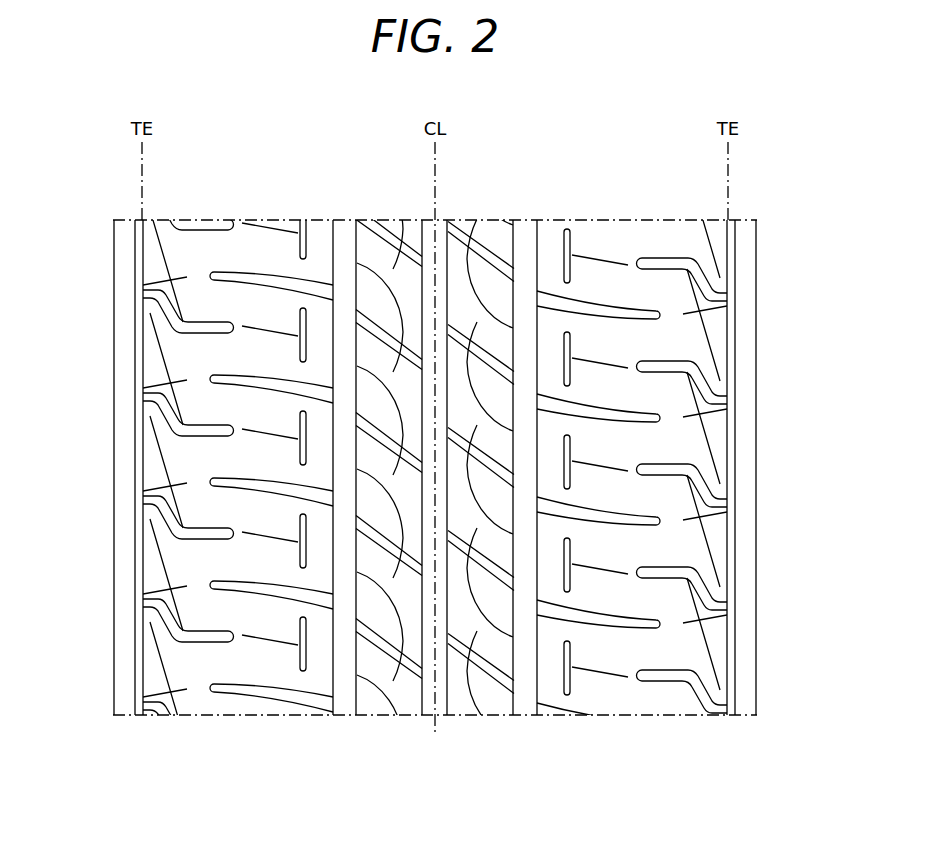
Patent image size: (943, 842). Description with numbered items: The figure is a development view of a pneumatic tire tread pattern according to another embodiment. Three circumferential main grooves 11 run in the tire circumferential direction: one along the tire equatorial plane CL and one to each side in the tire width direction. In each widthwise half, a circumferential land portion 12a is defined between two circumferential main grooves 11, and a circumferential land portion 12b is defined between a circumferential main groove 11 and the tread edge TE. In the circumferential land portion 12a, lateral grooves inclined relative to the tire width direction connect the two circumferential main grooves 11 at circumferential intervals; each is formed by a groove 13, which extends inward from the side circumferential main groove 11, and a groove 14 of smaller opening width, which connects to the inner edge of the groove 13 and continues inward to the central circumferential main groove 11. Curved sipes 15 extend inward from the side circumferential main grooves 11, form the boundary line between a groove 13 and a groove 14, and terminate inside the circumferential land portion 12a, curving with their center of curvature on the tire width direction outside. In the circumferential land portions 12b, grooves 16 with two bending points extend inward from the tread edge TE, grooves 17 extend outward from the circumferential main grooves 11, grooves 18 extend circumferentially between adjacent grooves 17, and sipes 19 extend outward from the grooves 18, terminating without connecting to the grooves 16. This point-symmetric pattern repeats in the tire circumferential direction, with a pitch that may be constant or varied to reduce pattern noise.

The circumferential main groove 11 is at (523, 220).
The circumferential land portion 12a is at (513, 727).
The circumferential land portion 12b is at (727, 727).
The groove 13 is at (492, 260).
The groove 14 is at (414, 256).
The curved sipe 15 is at (402, 263).
The groove 16 is at (708, 287).
The groove 17 is at (632, 313).
The groove 18 is at (567, 228).
The sipe 19 is at (598, 258).